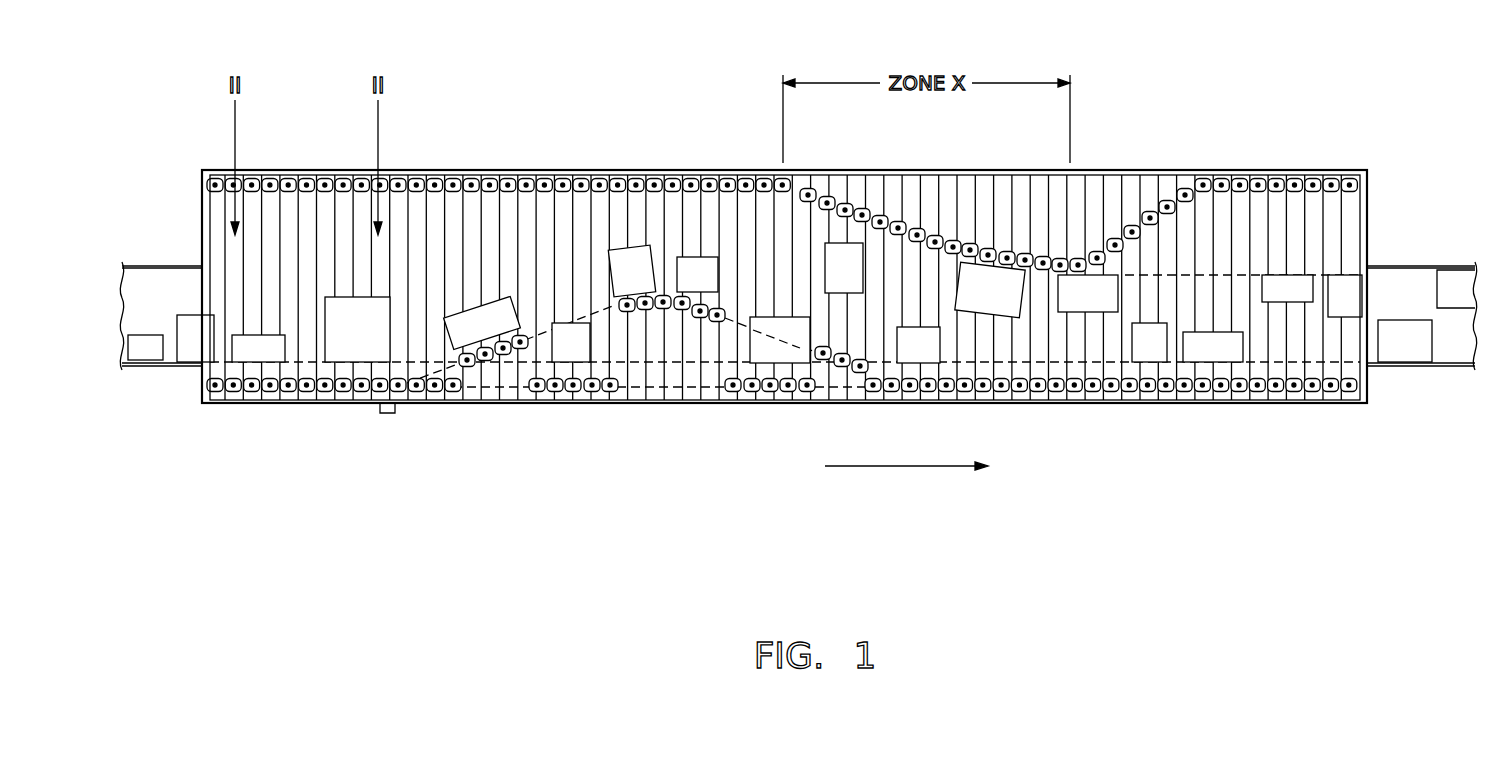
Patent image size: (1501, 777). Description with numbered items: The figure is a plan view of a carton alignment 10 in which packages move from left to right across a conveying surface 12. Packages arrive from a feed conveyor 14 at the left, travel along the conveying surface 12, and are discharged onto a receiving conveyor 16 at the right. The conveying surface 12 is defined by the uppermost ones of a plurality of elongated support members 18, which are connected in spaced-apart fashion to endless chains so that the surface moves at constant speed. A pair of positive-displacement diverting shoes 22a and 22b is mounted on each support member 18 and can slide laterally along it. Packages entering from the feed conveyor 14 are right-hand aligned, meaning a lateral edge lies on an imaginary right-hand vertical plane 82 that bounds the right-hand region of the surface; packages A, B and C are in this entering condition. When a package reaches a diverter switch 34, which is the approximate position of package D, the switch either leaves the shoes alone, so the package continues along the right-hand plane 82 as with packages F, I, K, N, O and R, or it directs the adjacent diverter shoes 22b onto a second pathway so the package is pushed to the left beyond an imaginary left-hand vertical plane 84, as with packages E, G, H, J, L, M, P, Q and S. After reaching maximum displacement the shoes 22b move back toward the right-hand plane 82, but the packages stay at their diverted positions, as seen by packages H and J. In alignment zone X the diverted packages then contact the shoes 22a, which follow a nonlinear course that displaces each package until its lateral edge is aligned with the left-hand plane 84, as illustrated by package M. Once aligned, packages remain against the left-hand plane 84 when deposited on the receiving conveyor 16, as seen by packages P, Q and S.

The carton alignment 10 is at (1137, 160).
The conveying surface 12 is at (287, 210).
The feed conveyor 14 is at (140, 266).
The receiving conveyor 16 is at (1455, 366).
The elongated support members 18 is at (215, 205).
The diverting shoe 22a is at (443, 183).
The diverting shoe 22b is at (232, 390).
The diverter switch 34 is at (393, 414).
The right-hand vertical plane 82 is at (1278, 392).
The left-hand vertical plane 84 is at (1220, 273).
The package A is at (142, 356).
The package B is at (195, 356).
The package C is at (253, 363).
The package D is at (357, 362).
The package E is at (472, 303).
The package F is at (575, 322).
The package G is at (633, 248).
The package H is at (697, 257).
The package I is at (757, 337).
The package J is at (842, 243).
The package K is at (917, 363).
The package L is at (987, 318).
The package M is at (1077, 311).
The package N is at (1157, 363).
The package O is at (1218, 363).
The package P is at (1312, 275).
The package Q is at (1357, 280).
The package R is at (1405, 353).
The package S is at (1458, 276).